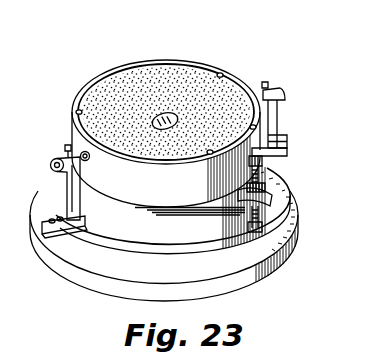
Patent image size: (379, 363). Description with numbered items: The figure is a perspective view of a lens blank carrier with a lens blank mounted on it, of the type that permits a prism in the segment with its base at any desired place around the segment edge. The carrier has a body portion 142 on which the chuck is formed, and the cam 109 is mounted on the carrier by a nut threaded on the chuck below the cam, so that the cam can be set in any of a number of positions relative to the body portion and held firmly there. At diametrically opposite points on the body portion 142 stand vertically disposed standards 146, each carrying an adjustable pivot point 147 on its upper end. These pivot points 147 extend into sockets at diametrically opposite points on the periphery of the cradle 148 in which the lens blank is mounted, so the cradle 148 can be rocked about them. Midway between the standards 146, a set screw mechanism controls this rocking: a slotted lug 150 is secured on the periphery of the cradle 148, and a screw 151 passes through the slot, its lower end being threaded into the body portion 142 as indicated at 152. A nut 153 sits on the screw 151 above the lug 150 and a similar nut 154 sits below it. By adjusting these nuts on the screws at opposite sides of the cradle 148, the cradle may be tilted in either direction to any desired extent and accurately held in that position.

The cam 109 is at (68, 270).
The body portion 142 is at (145, 228).
The standard 146 is at (72, 191).
The pivot point 147 is at (89, 159).
The cradle 148 is at (80, 139).
The lug 150 is at (278, 197).
The screw 151 is at (278, 162).
The threaded connection 152 is at (253, 241).
The nut 153 is at (264, 186).
The nut 154 is at (218, 218).